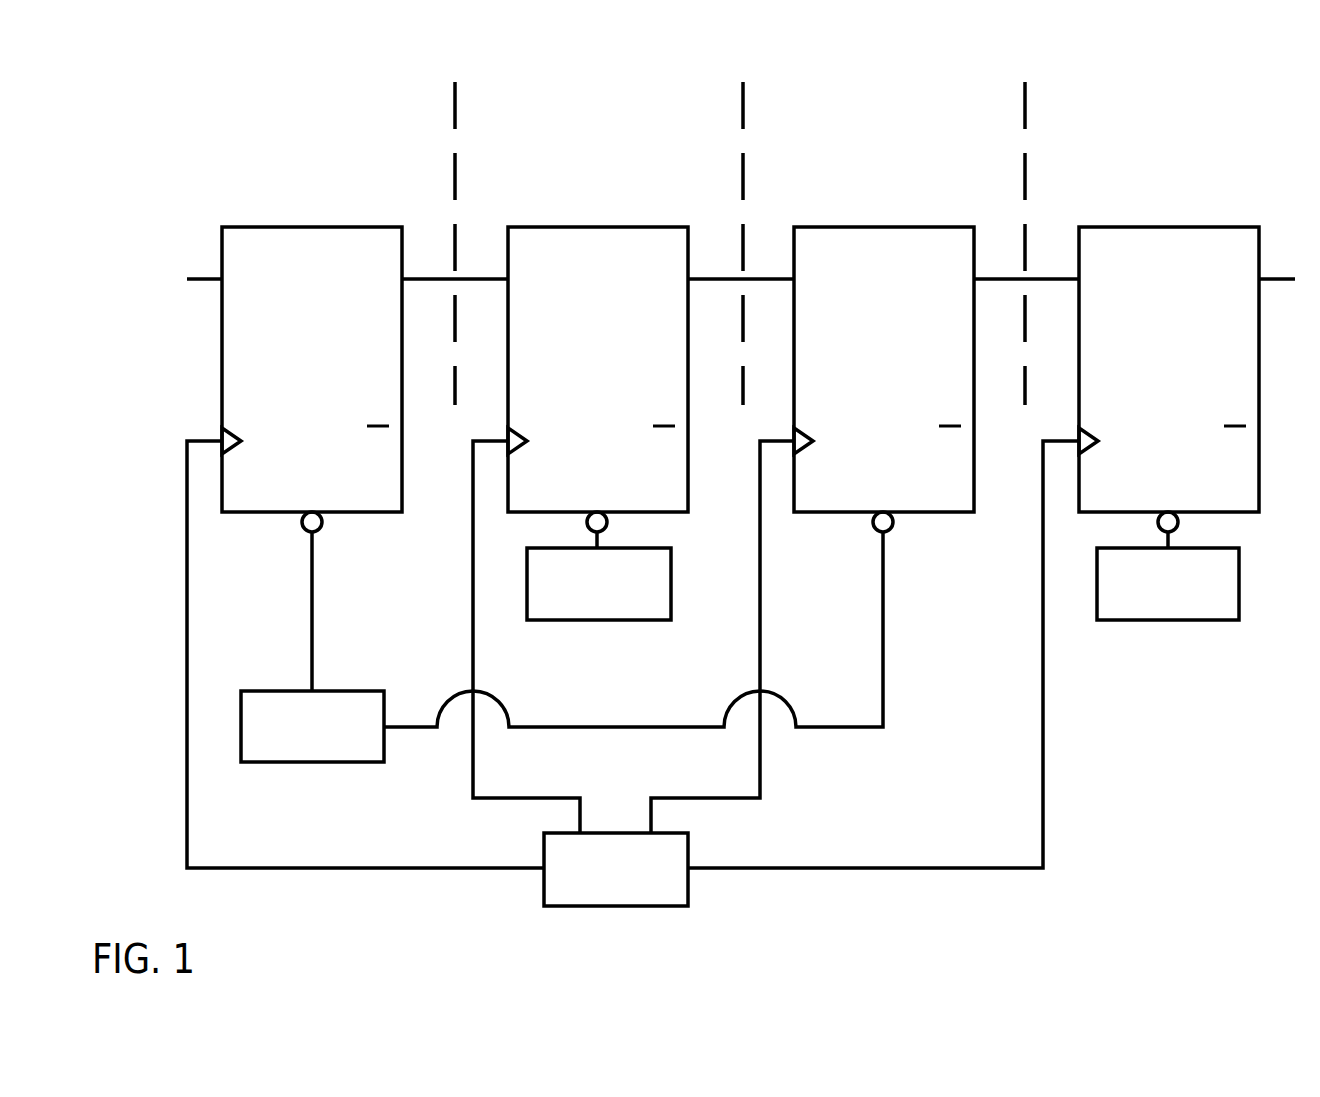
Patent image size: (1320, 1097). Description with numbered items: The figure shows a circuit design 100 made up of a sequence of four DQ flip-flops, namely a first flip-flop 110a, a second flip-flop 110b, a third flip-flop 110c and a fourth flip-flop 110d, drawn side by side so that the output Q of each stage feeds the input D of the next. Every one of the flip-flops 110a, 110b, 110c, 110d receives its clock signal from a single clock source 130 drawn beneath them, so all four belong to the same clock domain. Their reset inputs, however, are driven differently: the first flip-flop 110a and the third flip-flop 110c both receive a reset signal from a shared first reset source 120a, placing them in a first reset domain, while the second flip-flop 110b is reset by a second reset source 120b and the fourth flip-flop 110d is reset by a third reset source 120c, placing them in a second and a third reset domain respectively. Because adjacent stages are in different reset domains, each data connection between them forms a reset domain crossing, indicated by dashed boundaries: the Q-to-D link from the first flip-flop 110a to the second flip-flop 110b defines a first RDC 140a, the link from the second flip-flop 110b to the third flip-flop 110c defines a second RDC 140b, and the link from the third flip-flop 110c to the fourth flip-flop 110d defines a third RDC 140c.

The circuit design 100 is at (1237, 170).
The first flip-flop 110a is at (292, 227).
The second flip-flop 110b is at (578, 227).
The third flip-flop 110c is at (863, 227).
The fourth flip-flop 110d is at (1148, 227).
The first reset source 120a is at (337, 752).
The second reset source 120b is at (624, 609).
The third reset source 120c is at (1193, 609).
The clock source 130 is at (598, 896).
The first RDC 140a is at (455, 102).
The second RDC 140b is at (743, 102).
The third RDC 140c is at (1025, 102).